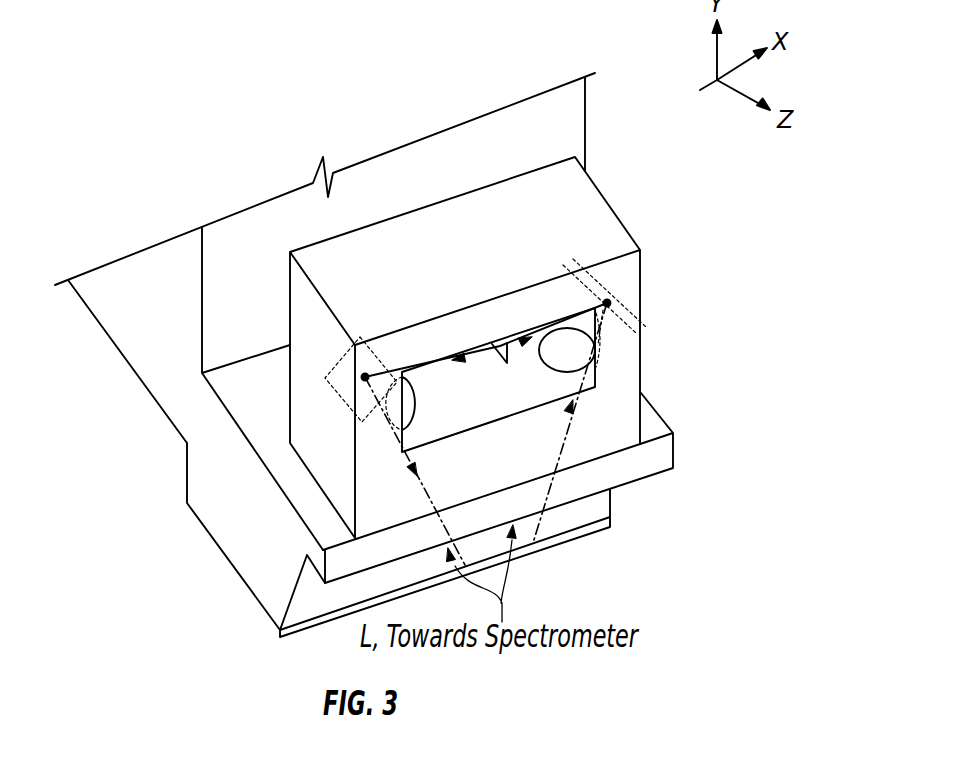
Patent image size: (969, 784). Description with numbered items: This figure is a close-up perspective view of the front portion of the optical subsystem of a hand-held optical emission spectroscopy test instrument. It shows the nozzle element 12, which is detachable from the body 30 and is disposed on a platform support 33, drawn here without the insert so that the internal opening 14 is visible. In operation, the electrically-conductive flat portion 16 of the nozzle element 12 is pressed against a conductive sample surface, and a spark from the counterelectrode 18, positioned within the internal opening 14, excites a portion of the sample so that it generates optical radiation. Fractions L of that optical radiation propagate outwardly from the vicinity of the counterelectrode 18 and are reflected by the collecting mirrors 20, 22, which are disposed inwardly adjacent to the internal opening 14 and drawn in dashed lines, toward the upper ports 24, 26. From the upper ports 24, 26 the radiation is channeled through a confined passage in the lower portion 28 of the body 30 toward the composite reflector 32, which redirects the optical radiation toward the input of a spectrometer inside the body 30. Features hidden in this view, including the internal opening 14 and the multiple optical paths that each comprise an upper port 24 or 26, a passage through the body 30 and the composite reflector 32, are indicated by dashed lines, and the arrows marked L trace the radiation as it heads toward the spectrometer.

The nozzle element 12 is at (585, 200).
The internal opening 14 is at (475, 401).
The electrically-conductive flat portion 16 is at (623, 393).
The counterelectrode 18 is at (507, 363).
The collecting mirror 20 is at (620, 307).
The collecting mirror 22 is at (328, 374).
The upper port 24 is at (563, 347).
The upper port 26 is at (387, 418).
The lower portion of the body 28 is at (250, 563).
The body 30 is at (264, 212).
The composite reflector 32 is at (608, 525).
The platform support 33 is at (660, 458).
The fractions of optical radiation L is at (457, 361).